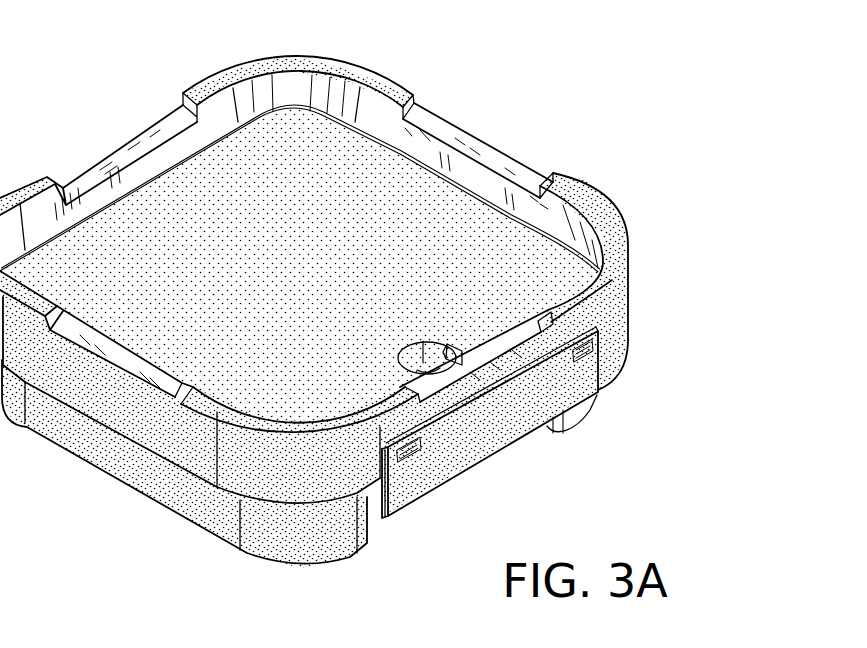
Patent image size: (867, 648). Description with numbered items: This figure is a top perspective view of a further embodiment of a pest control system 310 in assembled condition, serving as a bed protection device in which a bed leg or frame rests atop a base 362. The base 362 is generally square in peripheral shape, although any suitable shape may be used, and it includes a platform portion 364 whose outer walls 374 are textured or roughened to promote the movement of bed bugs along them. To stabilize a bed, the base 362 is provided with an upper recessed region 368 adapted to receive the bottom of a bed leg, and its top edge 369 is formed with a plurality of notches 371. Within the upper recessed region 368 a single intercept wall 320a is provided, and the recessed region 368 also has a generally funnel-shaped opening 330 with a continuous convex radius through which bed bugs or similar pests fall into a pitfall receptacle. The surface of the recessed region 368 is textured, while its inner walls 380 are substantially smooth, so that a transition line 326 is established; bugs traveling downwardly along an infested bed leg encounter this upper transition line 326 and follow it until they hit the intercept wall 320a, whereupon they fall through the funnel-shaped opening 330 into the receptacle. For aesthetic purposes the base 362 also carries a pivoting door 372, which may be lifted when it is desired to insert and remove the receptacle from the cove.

The pest control system 310 is at (575, 115).
The base 362 is at (632, 255).
The platform portion 364 is at (128, 462).
The outer walls 374 is at (196, 500).
The pivoting door 372 is at (456, 439).
The top edge 369 is at (290, 58).
The notches 371 is at (440, 133).
The upper recessed region 368 is at (152, 207).
The transition lines 326 is at (418, 165).
The inner walls 380 is at (553, 213).
The intercept wall 320a is at (460, 353).
The funnel-shaped opening 330 is at (423, 343).